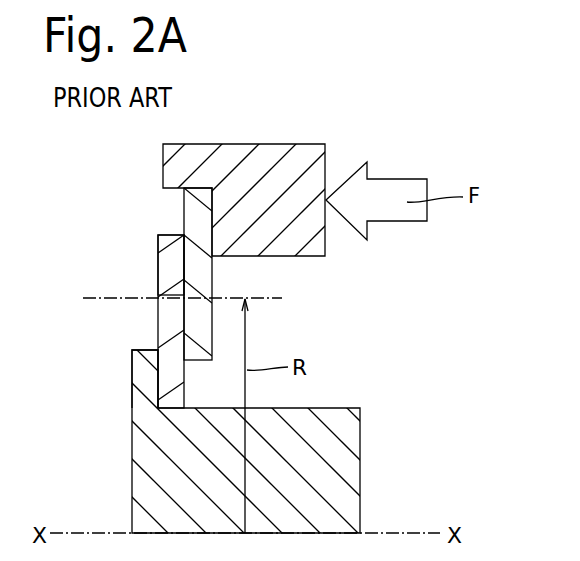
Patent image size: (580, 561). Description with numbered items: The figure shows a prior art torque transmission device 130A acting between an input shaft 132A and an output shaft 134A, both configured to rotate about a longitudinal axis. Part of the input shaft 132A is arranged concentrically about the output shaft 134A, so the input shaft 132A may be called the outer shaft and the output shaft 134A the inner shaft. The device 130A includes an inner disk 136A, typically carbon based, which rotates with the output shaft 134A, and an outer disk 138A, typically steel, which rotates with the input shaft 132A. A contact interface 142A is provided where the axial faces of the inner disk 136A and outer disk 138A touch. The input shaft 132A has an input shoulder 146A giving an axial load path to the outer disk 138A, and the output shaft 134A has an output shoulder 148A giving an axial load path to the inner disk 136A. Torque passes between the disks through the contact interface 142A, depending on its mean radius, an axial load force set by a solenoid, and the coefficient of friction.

The torque transmission device 130A is at (482, 297).
The input shaft 132A is at (297, 166).
The output shaft 134A is at (320, 470).
The inner disk 136A is at (170, 330).
The outer disk 138A is at (200, 273).
The contact interface 142A is at (165, 264).
The input shoulder 146A is at (213, 200).
The output shoulder 148A is at (158, 386).